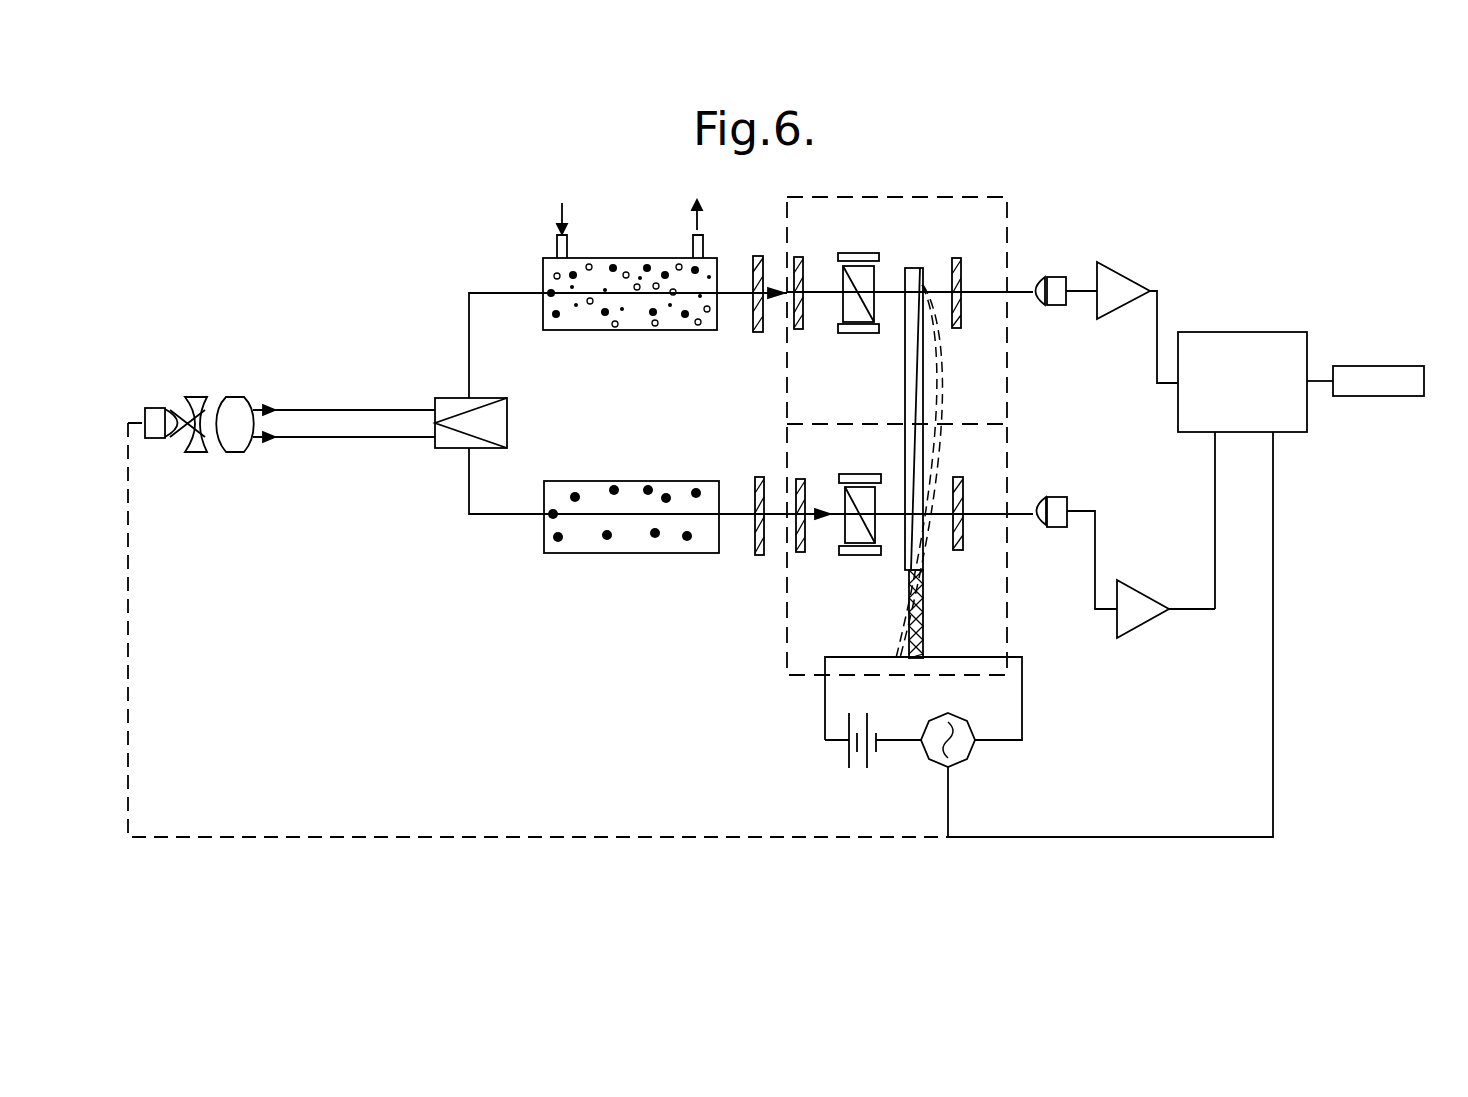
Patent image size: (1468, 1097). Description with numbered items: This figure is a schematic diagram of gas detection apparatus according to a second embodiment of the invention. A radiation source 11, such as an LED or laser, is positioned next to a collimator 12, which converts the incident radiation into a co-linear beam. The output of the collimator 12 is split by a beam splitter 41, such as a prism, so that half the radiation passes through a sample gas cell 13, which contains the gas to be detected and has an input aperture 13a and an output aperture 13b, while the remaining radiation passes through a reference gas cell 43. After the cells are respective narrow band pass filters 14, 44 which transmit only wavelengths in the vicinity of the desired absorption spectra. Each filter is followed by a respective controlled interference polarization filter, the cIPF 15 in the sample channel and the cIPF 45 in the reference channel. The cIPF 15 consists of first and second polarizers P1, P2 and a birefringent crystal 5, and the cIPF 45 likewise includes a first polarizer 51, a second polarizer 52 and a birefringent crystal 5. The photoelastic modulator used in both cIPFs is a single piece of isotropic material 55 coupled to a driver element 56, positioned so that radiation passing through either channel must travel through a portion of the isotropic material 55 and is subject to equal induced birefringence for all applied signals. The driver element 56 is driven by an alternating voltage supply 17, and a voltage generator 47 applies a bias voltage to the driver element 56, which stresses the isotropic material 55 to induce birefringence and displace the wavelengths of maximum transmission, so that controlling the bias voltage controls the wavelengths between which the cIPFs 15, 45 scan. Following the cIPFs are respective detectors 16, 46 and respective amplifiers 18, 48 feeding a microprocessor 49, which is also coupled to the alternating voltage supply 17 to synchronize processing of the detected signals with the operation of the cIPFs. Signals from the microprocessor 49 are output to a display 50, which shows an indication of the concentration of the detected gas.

The radiation source 11 is at (160, 407).
The collimator 12 is at (247, 390).
The beam splitter 41 is at (509, 423).
The sample gas cell 13 is at (580, 332).
The input aperture 13a is at (562, 203).
The output aperture 13b is at (697, 201).
The narrow band pass filter 14 is at (756, 334).
The controlled interference polarization filter (cIPF section) 15 is at (1007, 199).
The first polarizer P1 is at (797, 255).
The second polarizer P2 is at (955, 256).
The birefringent crystal 5 is at (852, 335).
The isotropic material 55 is at (914, 266).
The driver element 56 is at (925, 628).
The detector 16 is at (1057, 275).
The amplifier 18 is at (1128, 272).
The microprocessor 49 is at (1262, 332).
The display 50 is at (1388, 364).
The reference gas cell 43 is at (583, 555).
The narrow band pass filter 44 is at (757, 557).
The first polarizer 51 is at (800, 554).
The second polarizer 52 is at (957, 552).
The controlled interference polarization filter (cIPF section) 45 is at (1008, 600).
The detector 46 is at (1058, 495).
The amplifier 48 is at (1145, 590).
The voltage generator 47 is at (846, 760).
The alternating voltage supply 17 is at (964, 762).